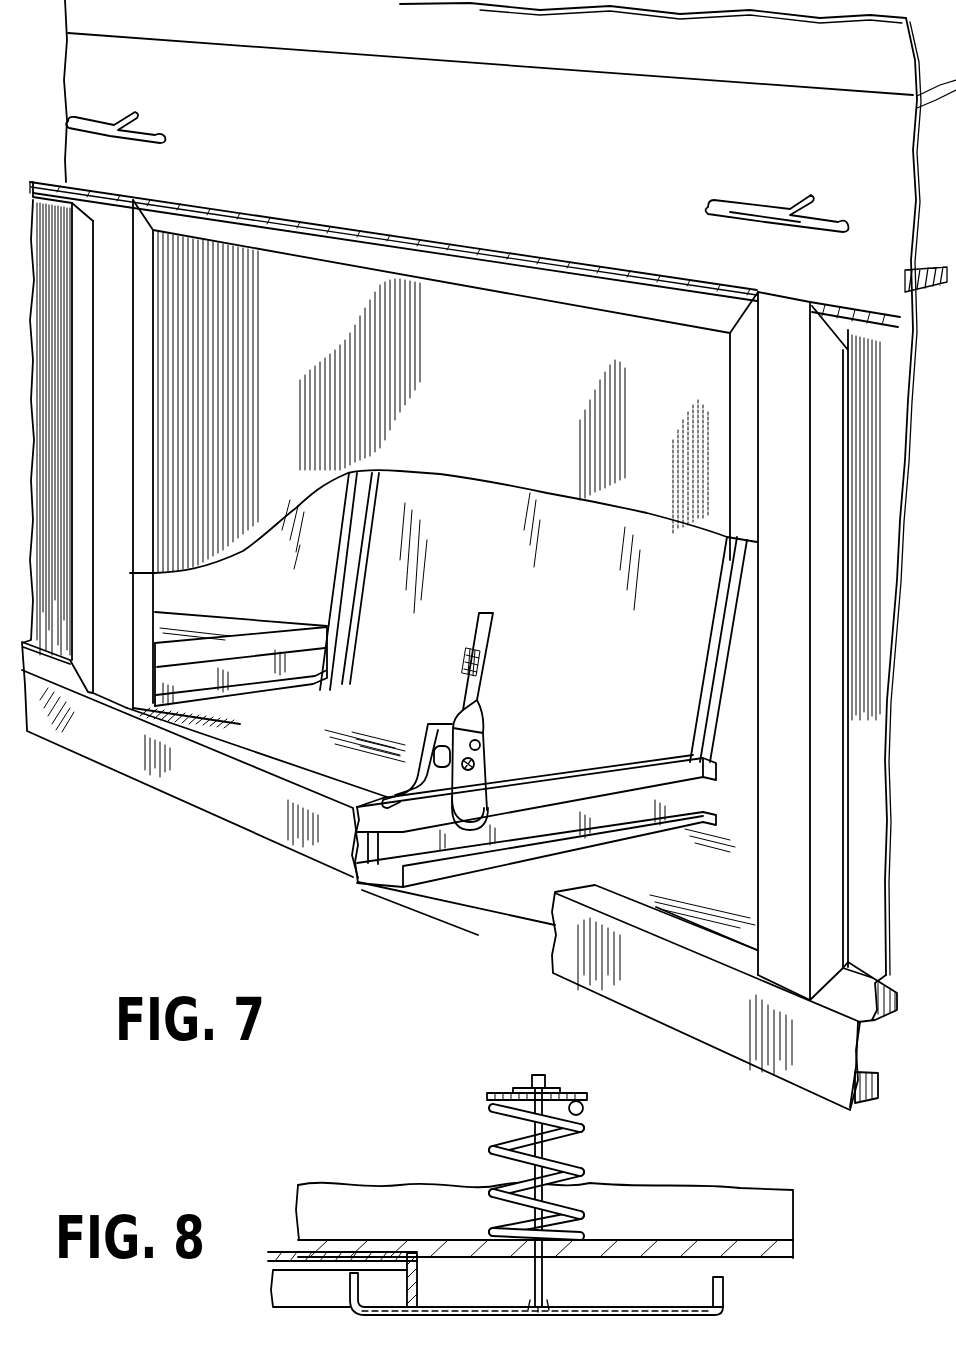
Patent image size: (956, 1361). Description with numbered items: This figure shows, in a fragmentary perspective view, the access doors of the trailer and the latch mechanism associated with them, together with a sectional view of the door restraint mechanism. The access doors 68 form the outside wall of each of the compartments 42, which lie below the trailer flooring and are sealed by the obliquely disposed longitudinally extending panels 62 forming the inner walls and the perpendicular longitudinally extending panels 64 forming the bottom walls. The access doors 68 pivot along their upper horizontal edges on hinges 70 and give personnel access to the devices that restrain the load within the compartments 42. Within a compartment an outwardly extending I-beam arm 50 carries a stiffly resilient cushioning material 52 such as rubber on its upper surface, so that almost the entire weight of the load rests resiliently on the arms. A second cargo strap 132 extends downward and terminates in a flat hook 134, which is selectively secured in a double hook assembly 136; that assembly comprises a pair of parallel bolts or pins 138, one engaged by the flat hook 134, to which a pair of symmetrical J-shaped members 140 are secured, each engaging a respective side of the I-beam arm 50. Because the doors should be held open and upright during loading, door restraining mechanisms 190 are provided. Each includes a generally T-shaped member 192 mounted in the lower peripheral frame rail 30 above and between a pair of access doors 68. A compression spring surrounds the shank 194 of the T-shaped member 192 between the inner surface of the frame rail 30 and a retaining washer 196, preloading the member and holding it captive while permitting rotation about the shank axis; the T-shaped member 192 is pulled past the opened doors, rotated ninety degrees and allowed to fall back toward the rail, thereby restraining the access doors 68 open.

In FIG. 7, the lower peripheral frame rail 30 is at (500, 155).
In FIG. 8, the lower peripheral frame rail 30 is at (645, 1250).
In FIG. 7, the compartments 42 is at (683, 632).
In FIG. 7, the I-beam arms 50 is at (203, 688).
In FIG. 7, the resilient cushioning material 52 is at (288, 632).
In FIG. 7, the obliquely disposed longitudinally extending panels 62 is at (486, 549).
In FIG. 7, the longitudinally extending panels 64 is at (366, 716).
In FIG. 7, the access doors 68 is at (450, 283).
In FIG. 8, the access doors 68 is at (295, 1297).
In FIG. 7, the hinges 70 is at (381, 232).
In FIG. 7, the second cargo strap 132 is at (491, 617).
In FIG. 7, the flat hook 134 is at (446, 712).
In FIG. 7, the double hook assembly 136 is at (490, 787).
In FIG. 7, the parallel bolts or pins 138 is at (470, 763).
In FIG. 7, the J-shaped members 140 is at (467, 818).
In FIG. 7, the door restraining mechanisms 190 is at (796, 186).
In FIG. 8, the door restraining mechanisms 190 is at (507, 1179).
In FIG. 7, the T-shaped member 192 is at (808, 220).
In FIG. 8, the T-shaped member 192 is at (723, 1292).
In FIG. 8, the shank 194 is at (535, 1080).
In FIG. 8, the retaining washer 196 is at (578, 1098).